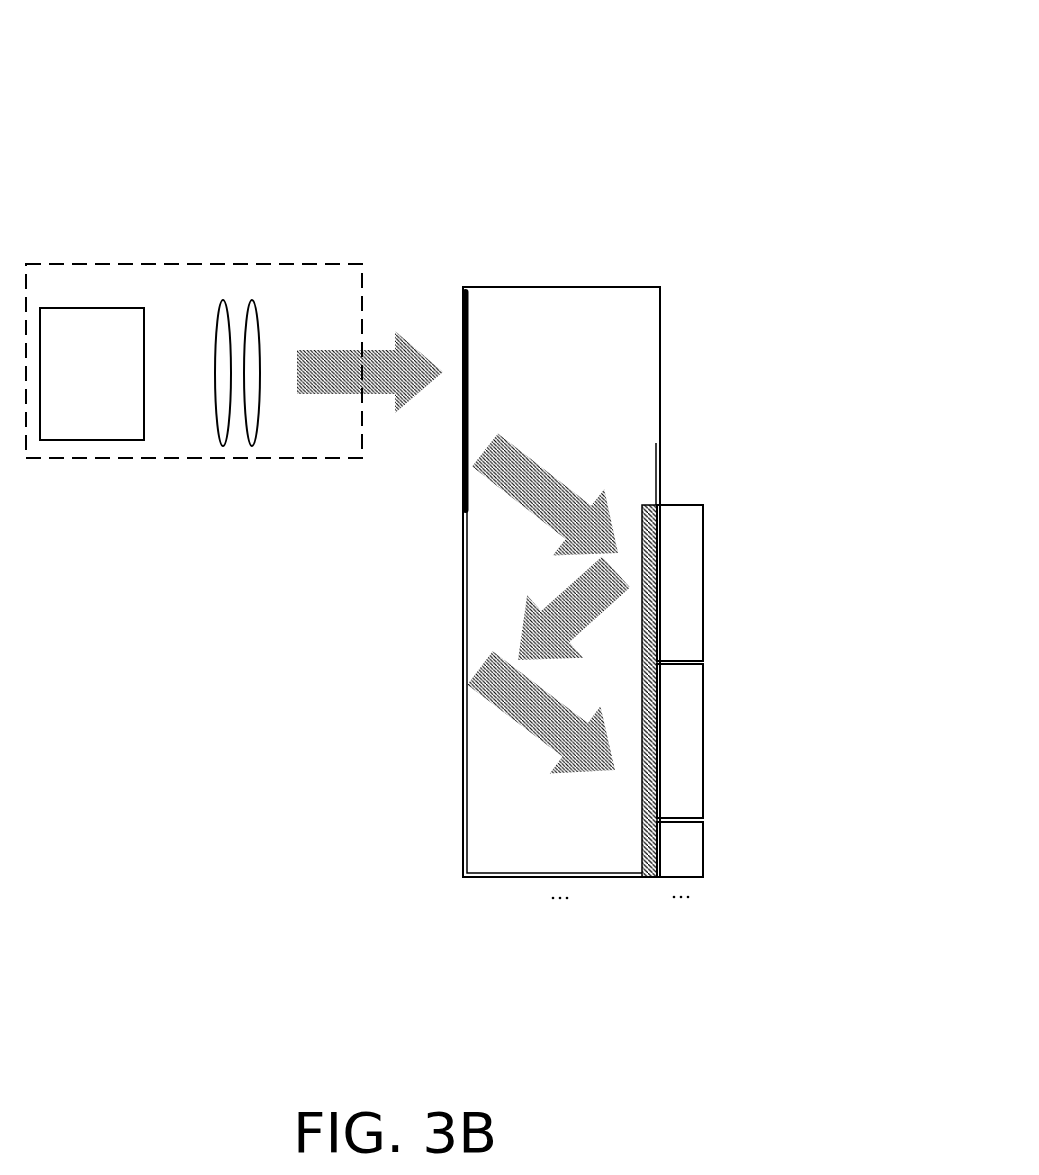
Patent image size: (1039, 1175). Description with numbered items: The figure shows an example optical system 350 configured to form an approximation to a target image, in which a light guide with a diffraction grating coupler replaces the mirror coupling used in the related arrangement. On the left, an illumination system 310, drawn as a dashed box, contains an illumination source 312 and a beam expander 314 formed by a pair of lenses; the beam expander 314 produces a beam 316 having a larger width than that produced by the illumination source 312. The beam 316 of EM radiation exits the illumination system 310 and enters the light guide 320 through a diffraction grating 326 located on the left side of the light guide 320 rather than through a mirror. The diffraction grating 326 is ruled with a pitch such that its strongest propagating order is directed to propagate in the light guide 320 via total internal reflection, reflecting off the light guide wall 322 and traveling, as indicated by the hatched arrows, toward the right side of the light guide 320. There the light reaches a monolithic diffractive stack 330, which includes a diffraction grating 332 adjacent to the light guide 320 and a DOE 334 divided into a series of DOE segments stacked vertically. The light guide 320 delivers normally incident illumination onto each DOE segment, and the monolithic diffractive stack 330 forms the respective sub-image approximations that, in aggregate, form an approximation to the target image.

The optical system 350 is at (165, 56).
The illumination system 310 is at (325, 298).
The illumination source 312 is at (111, 401).
The beam expander 314 is at (213, 440).
The beam 316 is at (378, 343).
The light guide 320 is at (676, 426).
The wall 322 is at (461, 648).
The diffraction grating 326 is at (469, 357).
The monolithic diffractive stack 330 is at (769, 719).
The diffraction grating 332 is at (661, 501).
The DOE 334 is at (797, 694).